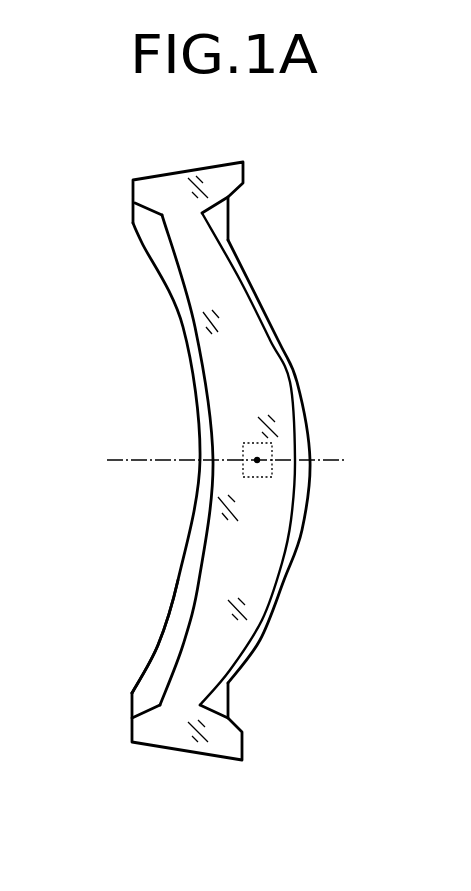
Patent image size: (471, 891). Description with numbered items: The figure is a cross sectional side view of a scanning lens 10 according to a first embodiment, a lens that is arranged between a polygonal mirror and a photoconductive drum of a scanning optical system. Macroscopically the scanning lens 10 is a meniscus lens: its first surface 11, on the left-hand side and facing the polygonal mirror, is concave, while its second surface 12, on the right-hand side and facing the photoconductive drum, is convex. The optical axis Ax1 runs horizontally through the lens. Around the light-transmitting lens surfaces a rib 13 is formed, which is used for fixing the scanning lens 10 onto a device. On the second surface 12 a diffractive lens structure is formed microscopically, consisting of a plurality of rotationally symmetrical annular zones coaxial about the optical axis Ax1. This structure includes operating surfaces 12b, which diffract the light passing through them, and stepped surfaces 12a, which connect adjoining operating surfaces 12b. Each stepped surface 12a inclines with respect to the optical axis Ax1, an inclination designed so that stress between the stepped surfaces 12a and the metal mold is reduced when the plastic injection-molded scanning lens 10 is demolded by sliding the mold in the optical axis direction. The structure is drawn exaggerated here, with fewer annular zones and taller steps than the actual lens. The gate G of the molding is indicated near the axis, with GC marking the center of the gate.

The scanning lens 10 is at (141, 243).
The first surface 11 is at (196, 327).
The second surface 12 is at (290, 382).
The stepped surfaces 12a is at (298, 487).
The operating surfaces 12b is at (301, 515).
The rib 13 is at (164, 650).
The optical axis Ax1 is at (121, 424).
The gate G is at (243, 450).
The center of the gate GC is at (257, 460).